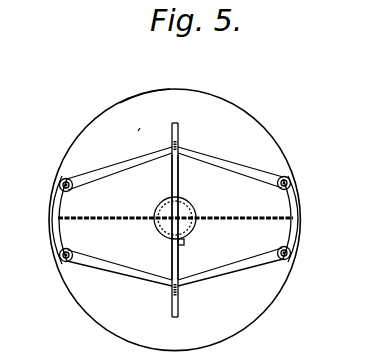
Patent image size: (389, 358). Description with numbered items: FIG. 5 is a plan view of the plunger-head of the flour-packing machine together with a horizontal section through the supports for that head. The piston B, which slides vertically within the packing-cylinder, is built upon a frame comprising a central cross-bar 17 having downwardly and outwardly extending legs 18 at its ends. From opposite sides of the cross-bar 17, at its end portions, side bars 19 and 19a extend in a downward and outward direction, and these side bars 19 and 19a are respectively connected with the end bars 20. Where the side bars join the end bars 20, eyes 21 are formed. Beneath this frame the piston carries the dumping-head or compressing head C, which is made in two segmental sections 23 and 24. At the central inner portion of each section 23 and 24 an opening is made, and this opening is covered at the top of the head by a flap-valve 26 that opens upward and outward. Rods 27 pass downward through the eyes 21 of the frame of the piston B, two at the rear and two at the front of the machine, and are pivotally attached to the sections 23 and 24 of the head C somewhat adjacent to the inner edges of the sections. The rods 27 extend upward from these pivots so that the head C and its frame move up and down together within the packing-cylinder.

The central cross-bar 17 is at (180, 189).
The legs 18 is at (178, 146).
The side bar 19 is at (235, 164).
The side bar 19a is at (125, 163).
The end bars 20 is at (56, 229).
The eyes 21 is at (61, 184).
The segmental section 23 is at (143, 118).
The segmental section 24 is at (200, 347).
The flap-valve 26 is at (165, 213).
The rods 27 is at (72, 189).
The piston B is at (279, 174).
The dumping-head C is at (145, 85).